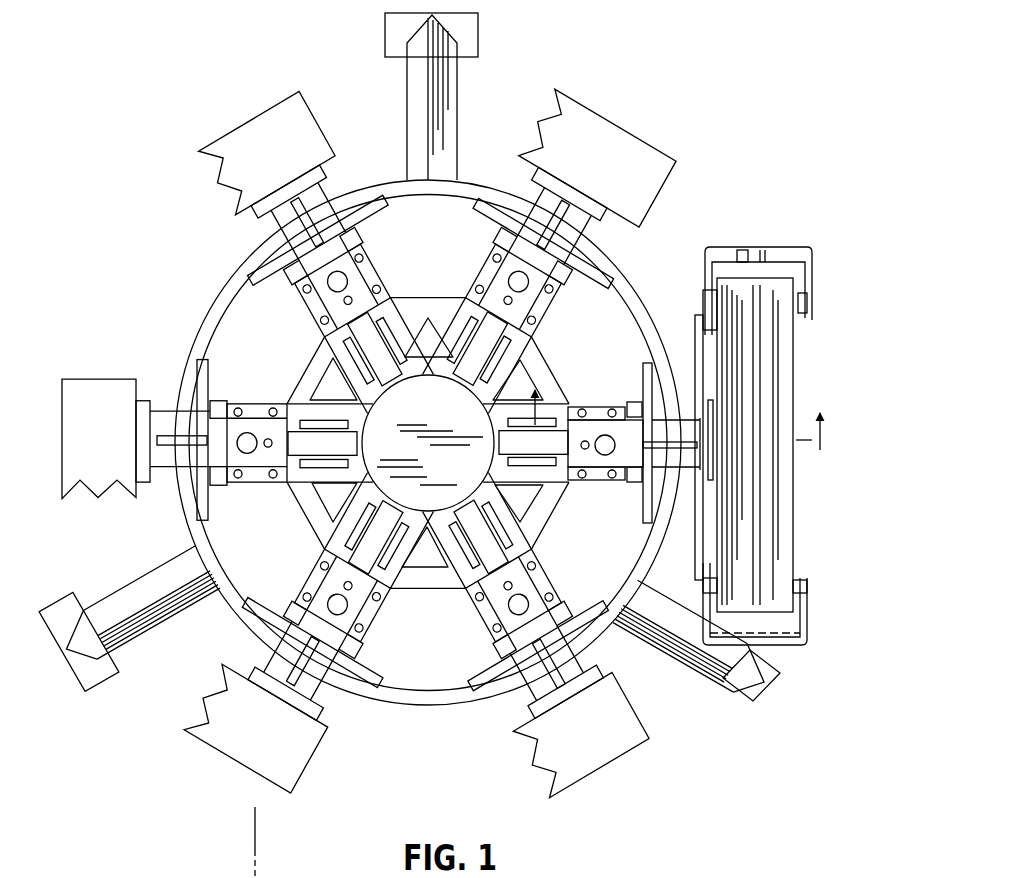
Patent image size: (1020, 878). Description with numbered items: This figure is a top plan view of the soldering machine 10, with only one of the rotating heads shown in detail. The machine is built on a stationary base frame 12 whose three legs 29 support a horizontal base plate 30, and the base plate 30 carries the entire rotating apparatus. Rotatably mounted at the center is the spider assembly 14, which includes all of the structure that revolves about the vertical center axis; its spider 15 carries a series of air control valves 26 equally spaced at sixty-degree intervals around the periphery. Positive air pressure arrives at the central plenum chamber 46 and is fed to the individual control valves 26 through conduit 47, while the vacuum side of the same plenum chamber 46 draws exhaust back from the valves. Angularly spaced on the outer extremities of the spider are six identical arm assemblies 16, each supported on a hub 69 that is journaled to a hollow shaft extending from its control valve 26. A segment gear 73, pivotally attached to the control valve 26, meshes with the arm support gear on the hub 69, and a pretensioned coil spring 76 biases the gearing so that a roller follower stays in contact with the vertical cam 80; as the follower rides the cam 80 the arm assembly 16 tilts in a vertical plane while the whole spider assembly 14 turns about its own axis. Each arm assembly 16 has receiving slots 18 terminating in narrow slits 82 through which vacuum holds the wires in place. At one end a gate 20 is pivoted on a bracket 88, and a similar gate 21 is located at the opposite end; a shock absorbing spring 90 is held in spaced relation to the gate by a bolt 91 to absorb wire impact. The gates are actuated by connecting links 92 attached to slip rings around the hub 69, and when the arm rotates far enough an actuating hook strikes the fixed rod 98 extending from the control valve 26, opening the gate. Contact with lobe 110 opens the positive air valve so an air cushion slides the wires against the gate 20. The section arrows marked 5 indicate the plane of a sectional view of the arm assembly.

The soldering machine 10 is at (442, 445).
The stationary base frame 12 is at (470, 112).
The spider assembly 14 is at (304, 345).
The spider 15 is at (330, 528).
The arm assembly 16 is at (303, 88).
The receiving slot 18 is at (775, 541).
The gate 20 is at (806, 610).
The gate 21 is at (706, 266).
The air control valve 26 is at (258, 412).
The legs 29 is at (407, 92).
The base plate 30 is at (441, 667).
The plenum chamber 46 is at (472, 427).
The conduit 47 is at (455, 372).
The hub 69 is at (265, 222).
The segment gear 73 is at (645, 372).
The coil spring 76 is at (636, 400).
The vertical cam 80 is at (206, 315).
The slit 82 is at (777, 376).
The bracket 88 is at (807, 300).
The shock absorbing spring 90 is at (743, 257).
The bolt 91 is at (762, 258).
The connecting link 92 is at (697, 326).
The fixed rod 98 is at (308, 688).
The lobe 110 is at (332, 877).
The section line 5 is at (675, 417).